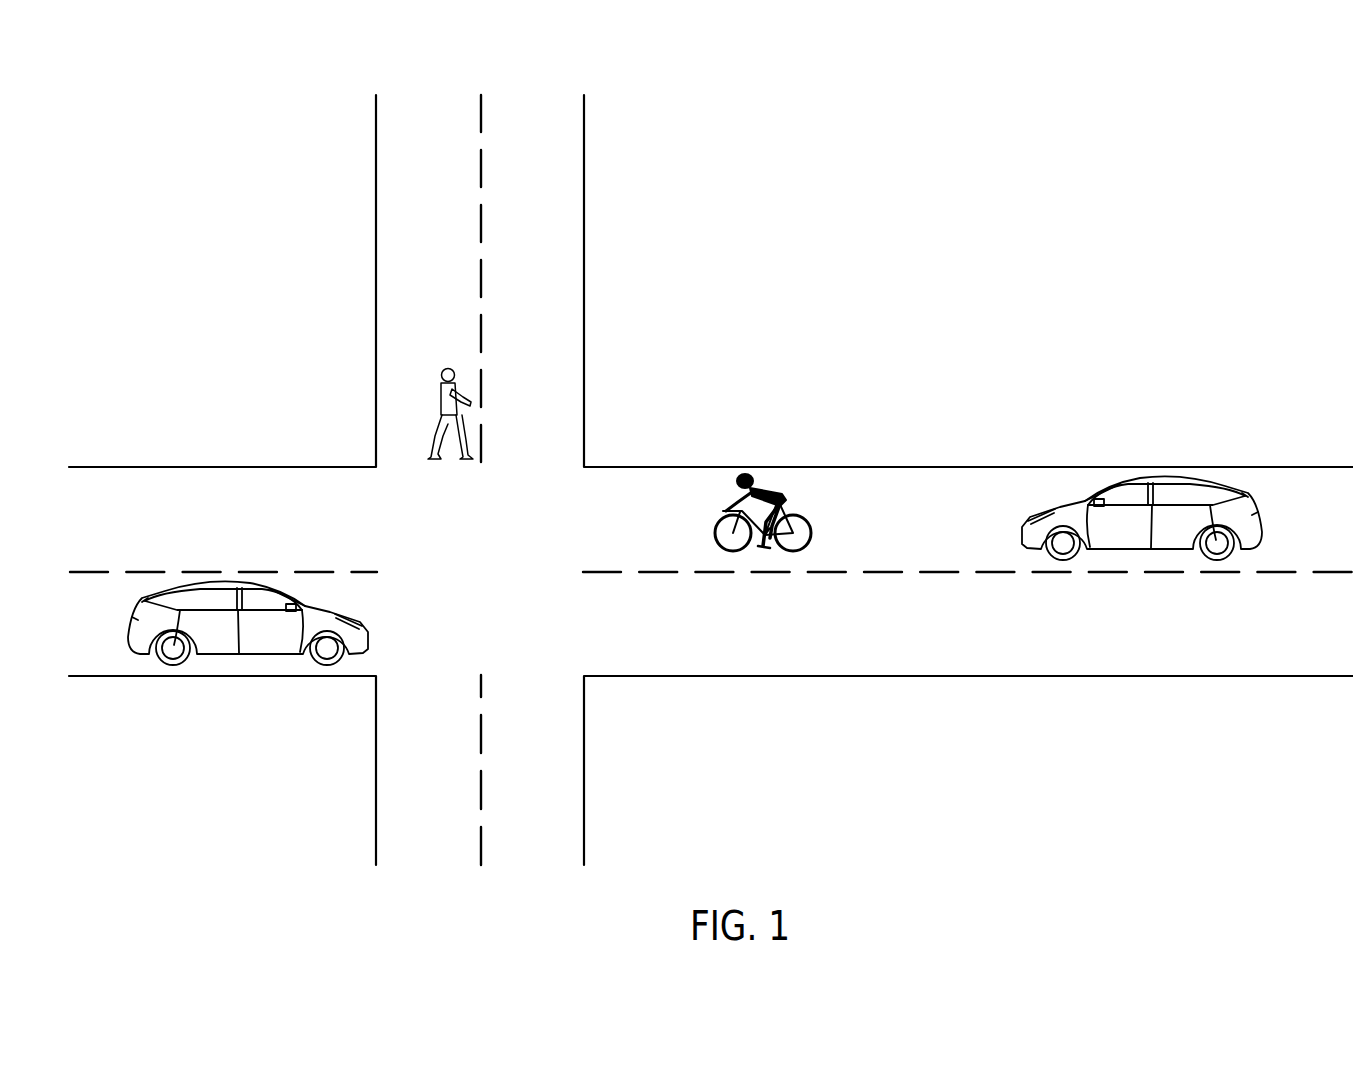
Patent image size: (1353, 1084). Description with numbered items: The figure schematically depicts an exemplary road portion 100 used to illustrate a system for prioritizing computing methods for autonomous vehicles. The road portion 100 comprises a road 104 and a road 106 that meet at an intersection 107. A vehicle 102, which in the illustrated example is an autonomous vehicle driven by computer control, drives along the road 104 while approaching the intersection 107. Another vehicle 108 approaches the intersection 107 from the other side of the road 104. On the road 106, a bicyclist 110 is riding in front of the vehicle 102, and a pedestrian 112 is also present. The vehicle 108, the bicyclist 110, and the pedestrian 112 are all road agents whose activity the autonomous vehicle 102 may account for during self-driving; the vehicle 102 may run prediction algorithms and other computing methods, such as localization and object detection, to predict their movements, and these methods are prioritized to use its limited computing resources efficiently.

The road portion 100 is at (188, 139).
The vehicle 102 is at (1263, 527).
The road 104 is at (1018, 467).
The road 106 is at (584, 281).
The intersection 107 is at (363, 450).
The vehicle 108 is at (128, 631).
The bicyclist 110 is at (812, 527).
The pedestrian 112 is at (448, 368).